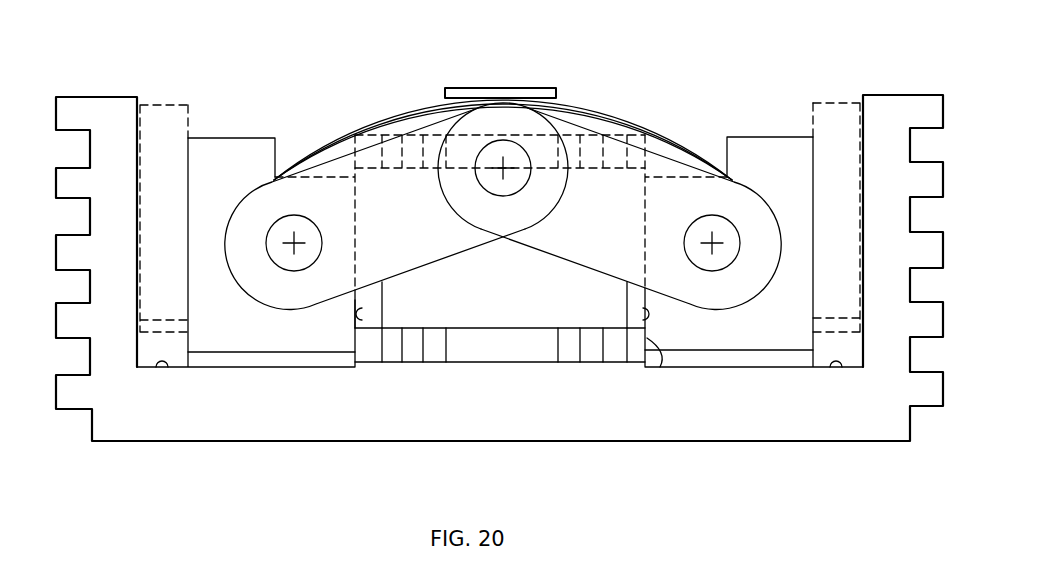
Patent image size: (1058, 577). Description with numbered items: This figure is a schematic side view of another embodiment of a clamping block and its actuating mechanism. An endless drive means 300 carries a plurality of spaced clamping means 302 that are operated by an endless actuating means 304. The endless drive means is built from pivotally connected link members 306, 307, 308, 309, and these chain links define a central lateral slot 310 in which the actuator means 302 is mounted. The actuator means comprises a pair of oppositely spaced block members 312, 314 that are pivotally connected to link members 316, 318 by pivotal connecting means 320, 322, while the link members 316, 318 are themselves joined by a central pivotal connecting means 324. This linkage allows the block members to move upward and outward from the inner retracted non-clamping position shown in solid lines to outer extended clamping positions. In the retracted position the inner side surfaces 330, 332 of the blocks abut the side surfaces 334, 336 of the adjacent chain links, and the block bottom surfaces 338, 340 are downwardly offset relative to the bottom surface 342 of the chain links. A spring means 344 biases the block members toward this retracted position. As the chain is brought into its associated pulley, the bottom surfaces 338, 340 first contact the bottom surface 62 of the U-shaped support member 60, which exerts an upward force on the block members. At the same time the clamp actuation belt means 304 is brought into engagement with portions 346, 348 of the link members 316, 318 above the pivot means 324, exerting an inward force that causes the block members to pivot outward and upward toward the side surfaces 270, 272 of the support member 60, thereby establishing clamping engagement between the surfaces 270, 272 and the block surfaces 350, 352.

The U-shaped support member 60 is at (153, 441).
The bottom surface 62 is at (838, 363).
The side surface 270 is at (137, 127).
The side surface 272 is at (862, 123).
The endless drive means 300 is at (503, 366).
The clamping means 302 is at (627, 93).
The endless actuating means 304 is at (465, 88).
The link member 306 is at (372, 355).
The link member 307 is at (412, 352).
The link member 308 is at (568, 355).
The link member 309 is at (613, 353).
The central lateral slot 310 is at (532, 294).
The block member 312 is at (228, 335).
The block member 314 is at (763, 333).
The link member 316 is at (413, 257).
The link member 318 is at (622, 262).
The pivotal connecting means 320 is at (294, 271).
The pivotal connecting means 322 is at (708, 271).
The pivotal connecting means 324 is at (510, 185).
The inner side surface 330 is at (357, 313).
The inner side surface 332 is at (643, 312).
The side surface 334 is at (348, 342).
The side surface 336 is at (669, 368).
The bottom surface 338 is at (258, 368).
The bottom surface 340 is at (718, 367).
The bottom surface 342 is at (433, 353).
The spring means 344 is at (325, 142).
The portion 346 is at (438, 120).
The portion 348 is at (535, 117).
The block surface 350 is at (187, 230).
The block surface 352 is at (815, 223).